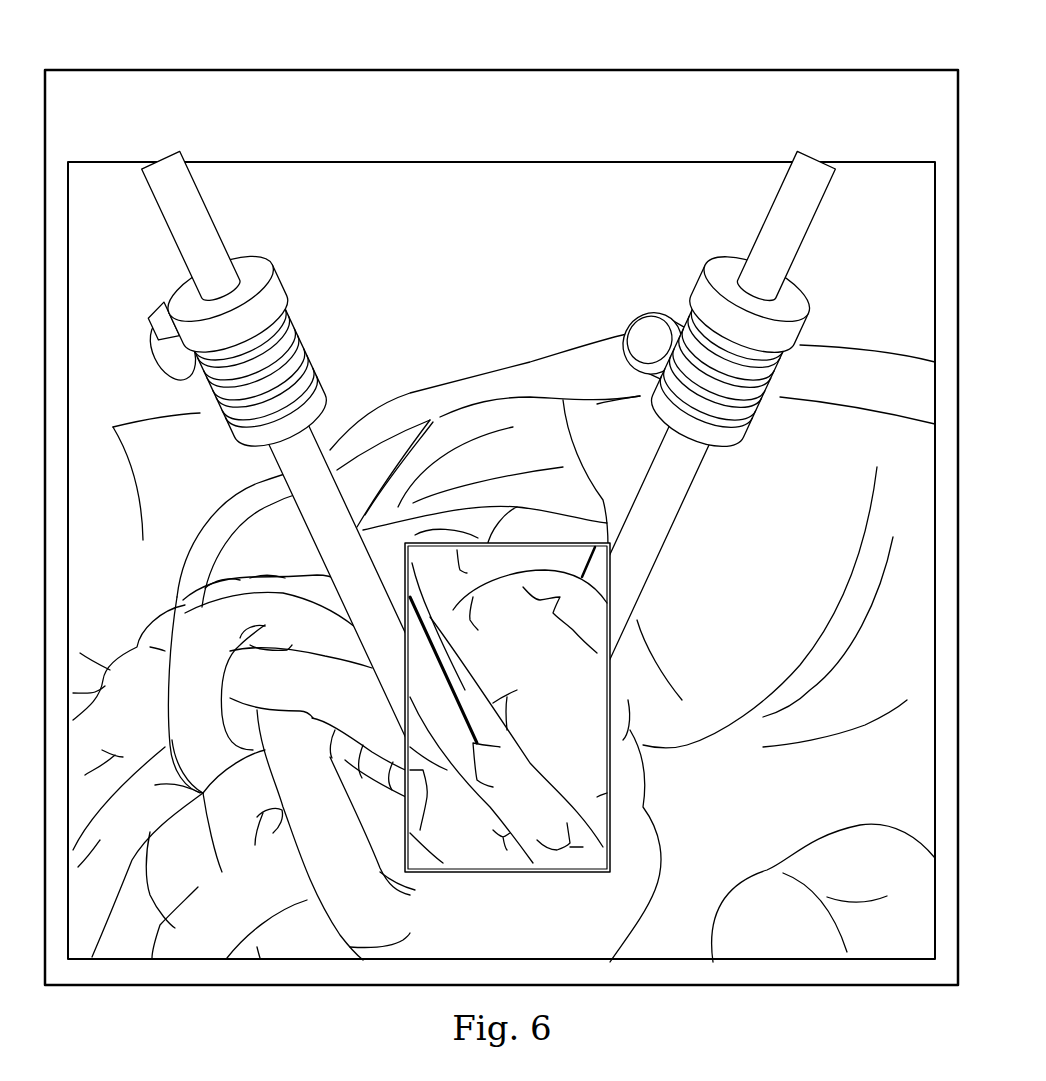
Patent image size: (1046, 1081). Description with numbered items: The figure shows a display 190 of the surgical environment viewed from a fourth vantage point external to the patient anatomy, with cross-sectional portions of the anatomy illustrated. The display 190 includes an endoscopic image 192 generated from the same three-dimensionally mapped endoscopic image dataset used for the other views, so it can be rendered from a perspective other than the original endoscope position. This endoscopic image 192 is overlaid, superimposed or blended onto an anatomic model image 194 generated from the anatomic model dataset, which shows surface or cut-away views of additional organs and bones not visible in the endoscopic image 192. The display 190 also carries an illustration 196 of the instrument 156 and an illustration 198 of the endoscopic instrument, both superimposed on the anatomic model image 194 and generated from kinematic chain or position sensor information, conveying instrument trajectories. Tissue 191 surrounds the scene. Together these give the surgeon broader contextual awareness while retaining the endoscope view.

The display 190 is at (609, 67).
The anatomic model image 194 is at (384, 160).
The tissue 191 is at (558, 349).
The illustration of the instrument 196 is at (306, 531).
The illustration of the endoscopic instrument 198 is at (673, 522).
The endoscopic image 192 is at (610, 762).
The instrument 156 is at (468, 673).